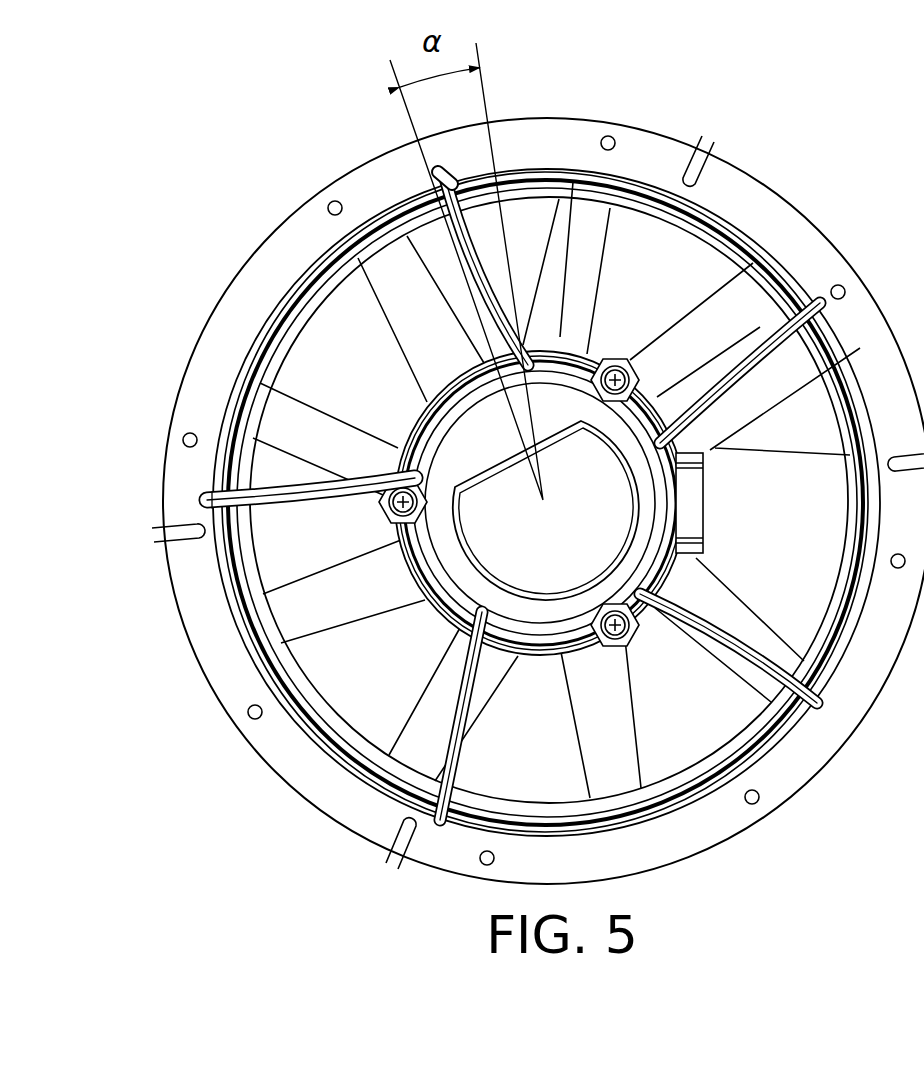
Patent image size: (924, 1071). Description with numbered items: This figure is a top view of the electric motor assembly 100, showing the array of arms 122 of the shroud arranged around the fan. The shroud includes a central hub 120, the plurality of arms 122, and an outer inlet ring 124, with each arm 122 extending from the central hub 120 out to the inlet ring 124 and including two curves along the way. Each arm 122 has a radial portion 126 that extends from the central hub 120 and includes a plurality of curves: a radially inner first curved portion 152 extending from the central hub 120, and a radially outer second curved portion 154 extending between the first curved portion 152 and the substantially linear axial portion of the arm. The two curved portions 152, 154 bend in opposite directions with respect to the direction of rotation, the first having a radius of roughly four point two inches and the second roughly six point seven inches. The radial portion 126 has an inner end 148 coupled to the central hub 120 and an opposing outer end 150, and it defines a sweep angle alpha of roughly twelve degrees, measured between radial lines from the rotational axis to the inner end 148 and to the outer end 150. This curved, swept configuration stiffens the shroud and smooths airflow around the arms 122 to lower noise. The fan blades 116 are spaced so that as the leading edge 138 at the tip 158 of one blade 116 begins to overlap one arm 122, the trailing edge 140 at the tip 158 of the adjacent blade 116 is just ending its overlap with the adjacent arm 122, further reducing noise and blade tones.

The electric motor assembly 100 is at (118, 212).
The blades 116 is at (318, 374).
The central hub 120 is at (523, 554).
The arms 122 is at (290, 475).
The inlet ring 124 is at (192, 400).
The radial portion 126 is at (822, 247).
The leading edge 138 is at (410, 345).
The trailing edge 140 is at (398, 447).
The inner end 148 is at (550, 343).
The outer end 150 is at (440, 390).
The first curved portion 152 is at (510, 325).
The second curved portion 154 is at (410, 184).
The tip 158 is at (288, 300).